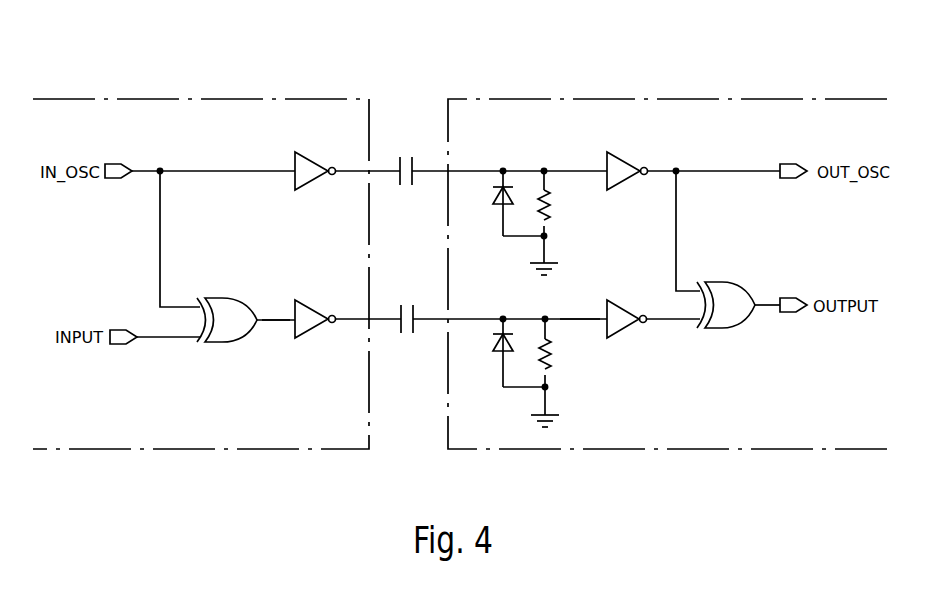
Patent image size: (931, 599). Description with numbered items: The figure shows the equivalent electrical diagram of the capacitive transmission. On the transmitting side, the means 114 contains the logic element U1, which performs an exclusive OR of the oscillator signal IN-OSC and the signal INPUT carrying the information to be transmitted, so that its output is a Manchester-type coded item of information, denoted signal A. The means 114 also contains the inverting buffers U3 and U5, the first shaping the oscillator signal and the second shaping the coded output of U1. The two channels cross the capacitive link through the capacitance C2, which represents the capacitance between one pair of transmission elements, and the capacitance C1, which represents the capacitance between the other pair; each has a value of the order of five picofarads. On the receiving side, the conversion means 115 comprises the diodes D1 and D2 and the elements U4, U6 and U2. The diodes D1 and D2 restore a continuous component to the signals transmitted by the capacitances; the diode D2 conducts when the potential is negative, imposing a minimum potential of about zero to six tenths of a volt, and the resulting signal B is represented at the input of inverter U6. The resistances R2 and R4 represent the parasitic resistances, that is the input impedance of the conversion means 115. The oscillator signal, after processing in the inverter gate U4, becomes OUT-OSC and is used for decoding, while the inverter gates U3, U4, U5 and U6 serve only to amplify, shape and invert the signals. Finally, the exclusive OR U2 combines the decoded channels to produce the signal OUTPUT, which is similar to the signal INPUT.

The means 114 is at (201, 228).
The conversion means 115 is at (667, 233).
The logic element U1 is at (227, 339).
The exclusive OR U2 is at (726, 323).
The inverting buffer U3 is at (315, 187).
The inverter gate U4 is at (627, 187).
The inverting buffer U5 is at (315, 340).
The inverter gate U6 is at (627, 337).
The capacitance C1 is at (408, 338).
The capacitance C2 is at (408, 189).
The diode D1 is at (485, 202).
The diode D2 is at (485, 351).
The resistance R2 is at (558, 215).
The resistance R4 is at (560, 365).
The signal A is at (276, 318).
The signal B is at (577, 318).